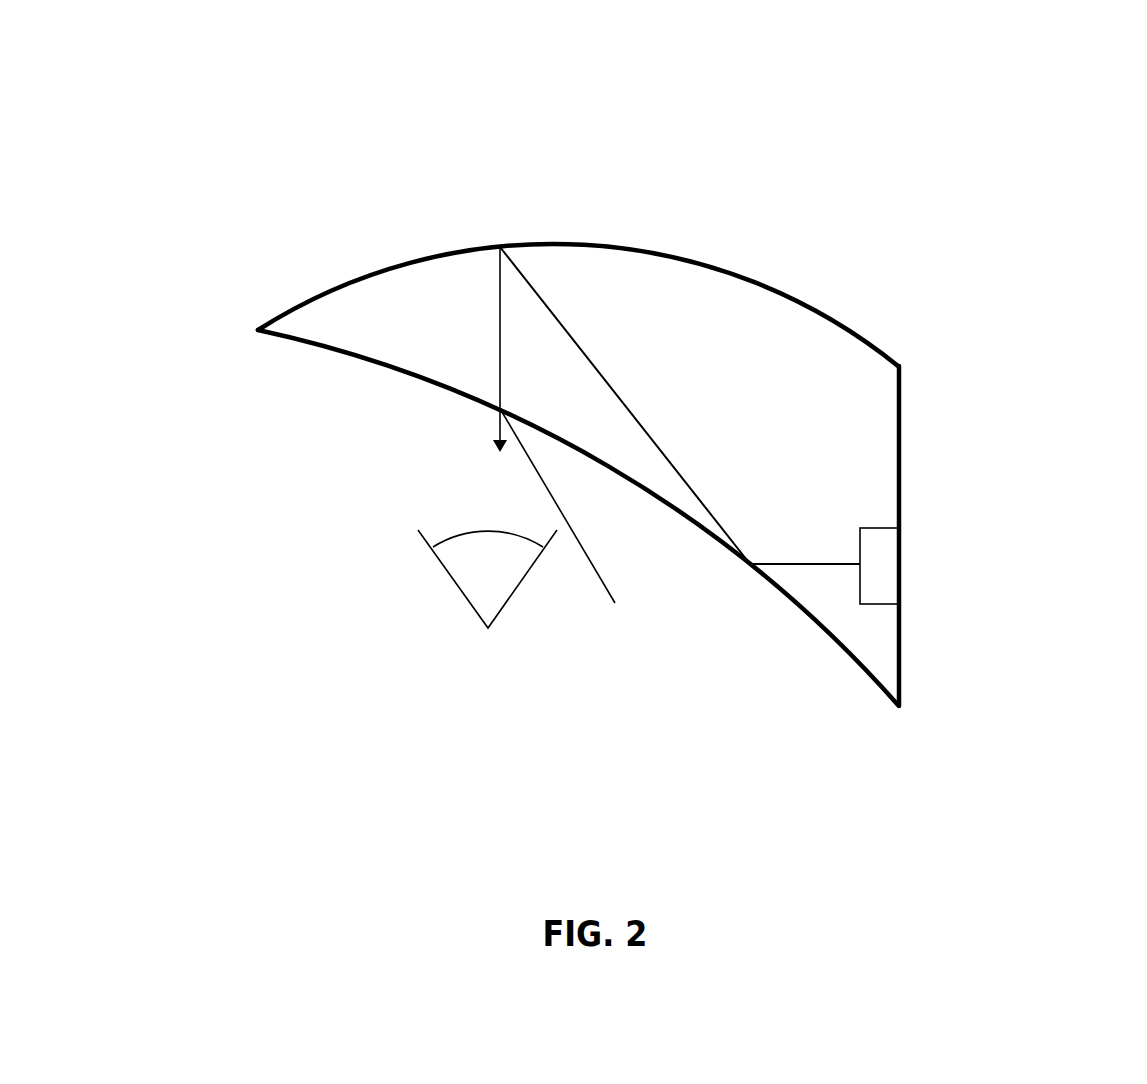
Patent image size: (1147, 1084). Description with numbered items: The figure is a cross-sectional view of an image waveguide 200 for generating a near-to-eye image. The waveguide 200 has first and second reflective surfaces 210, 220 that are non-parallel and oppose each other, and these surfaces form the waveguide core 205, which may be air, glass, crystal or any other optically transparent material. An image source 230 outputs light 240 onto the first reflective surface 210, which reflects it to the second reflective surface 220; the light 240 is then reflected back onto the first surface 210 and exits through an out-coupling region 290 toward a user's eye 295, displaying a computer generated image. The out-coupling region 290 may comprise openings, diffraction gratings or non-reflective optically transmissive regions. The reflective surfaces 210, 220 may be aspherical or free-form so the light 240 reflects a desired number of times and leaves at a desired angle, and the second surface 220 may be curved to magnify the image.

The waveguide 200 is at (231, 551).
The waveguide core 205 is at (850, 377).
The first reflective surface 210 is at (397, 370).
The second reflective surface 220 is at (398, 264).
The image source 230 is at (902, 563).
The light 240 is at (610, 383).
The out-coupling region 290 is at (572, 535).
The user's eye 295 is at (477, 605).